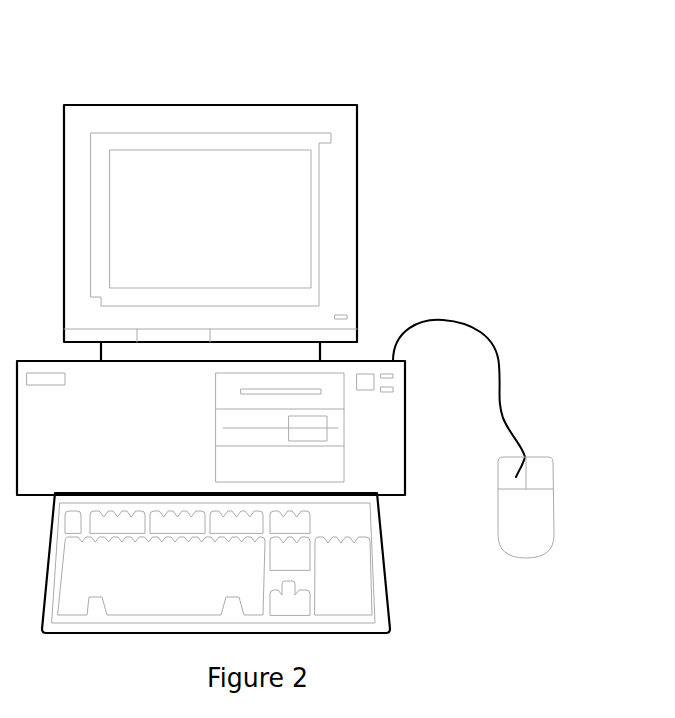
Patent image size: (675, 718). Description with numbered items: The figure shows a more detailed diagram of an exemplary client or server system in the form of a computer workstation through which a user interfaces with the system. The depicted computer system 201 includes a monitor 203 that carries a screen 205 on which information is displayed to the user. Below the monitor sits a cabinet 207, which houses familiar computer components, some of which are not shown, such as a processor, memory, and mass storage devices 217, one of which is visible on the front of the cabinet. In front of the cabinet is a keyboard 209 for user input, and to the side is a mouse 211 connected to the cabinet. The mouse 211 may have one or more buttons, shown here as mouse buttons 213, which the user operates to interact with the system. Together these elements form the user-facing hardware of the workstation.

The computer system 201 is at (385, 78).
The monitor 203 is at (271, 233).
The screen 205 is at (235, 216).
The cabinet 207 is at (253, 384).
The keyboard 209 is at (195, 588).
The mouse 211 is at (506, 457).
The mouse buttons 213 is at (538, 478).
The mass storage devices 217 is at (335, 376).